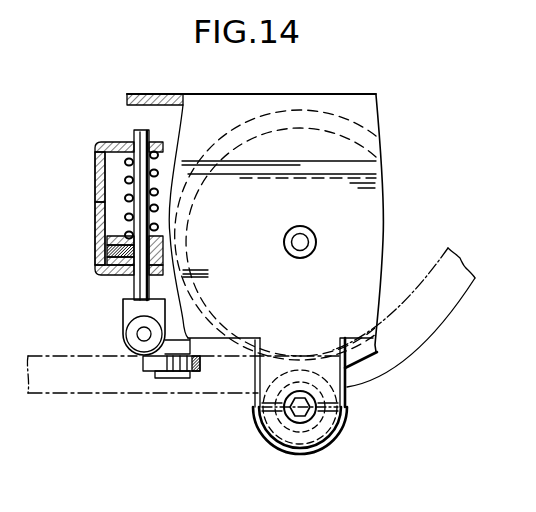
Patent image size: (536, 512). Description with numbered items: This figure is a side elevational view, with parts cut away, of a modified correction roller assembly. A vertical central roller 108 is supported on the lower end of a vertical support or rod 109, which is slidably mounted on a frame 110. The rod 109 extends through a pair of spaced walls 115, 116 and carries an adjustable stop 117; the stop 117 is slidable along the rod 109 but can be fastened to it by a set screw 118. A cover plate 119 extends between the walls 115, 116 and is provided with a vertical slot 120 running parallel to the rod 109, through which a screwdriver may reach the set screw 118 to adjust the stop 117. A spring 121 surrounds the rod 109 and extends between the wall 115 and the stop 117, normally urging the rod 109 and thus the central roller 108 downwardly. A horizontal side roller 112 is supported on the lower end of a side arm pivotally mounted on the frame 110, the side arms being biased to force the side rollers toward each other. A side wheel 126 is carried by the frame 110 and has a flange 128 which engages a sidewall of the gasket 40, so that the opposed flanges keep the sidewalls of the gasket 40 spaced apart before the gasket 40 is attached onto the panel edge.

The gasket 40 is at (57, 357).
The vertical central roller 108 is at (128, 343).
The vertical support or rod 109 is at (134, 130).
The frame 110 is at (295, 97).
The horizontal side roller 112 is at (165, 368).
The spaced wall 115 is at (121, 141).
The spaced wall 116 is at (122, 272).
The adjustable stop 117 is at (126, 242).
The set screw 118 is at (107, 251).
The cover plate 119 is at (95, 157).
The vertical slot 120 is at (95, 200).
The spring 121 is at (125, 174).
The side wheel 126 is at (290, 433).
The flange 128 is at (343, 423).